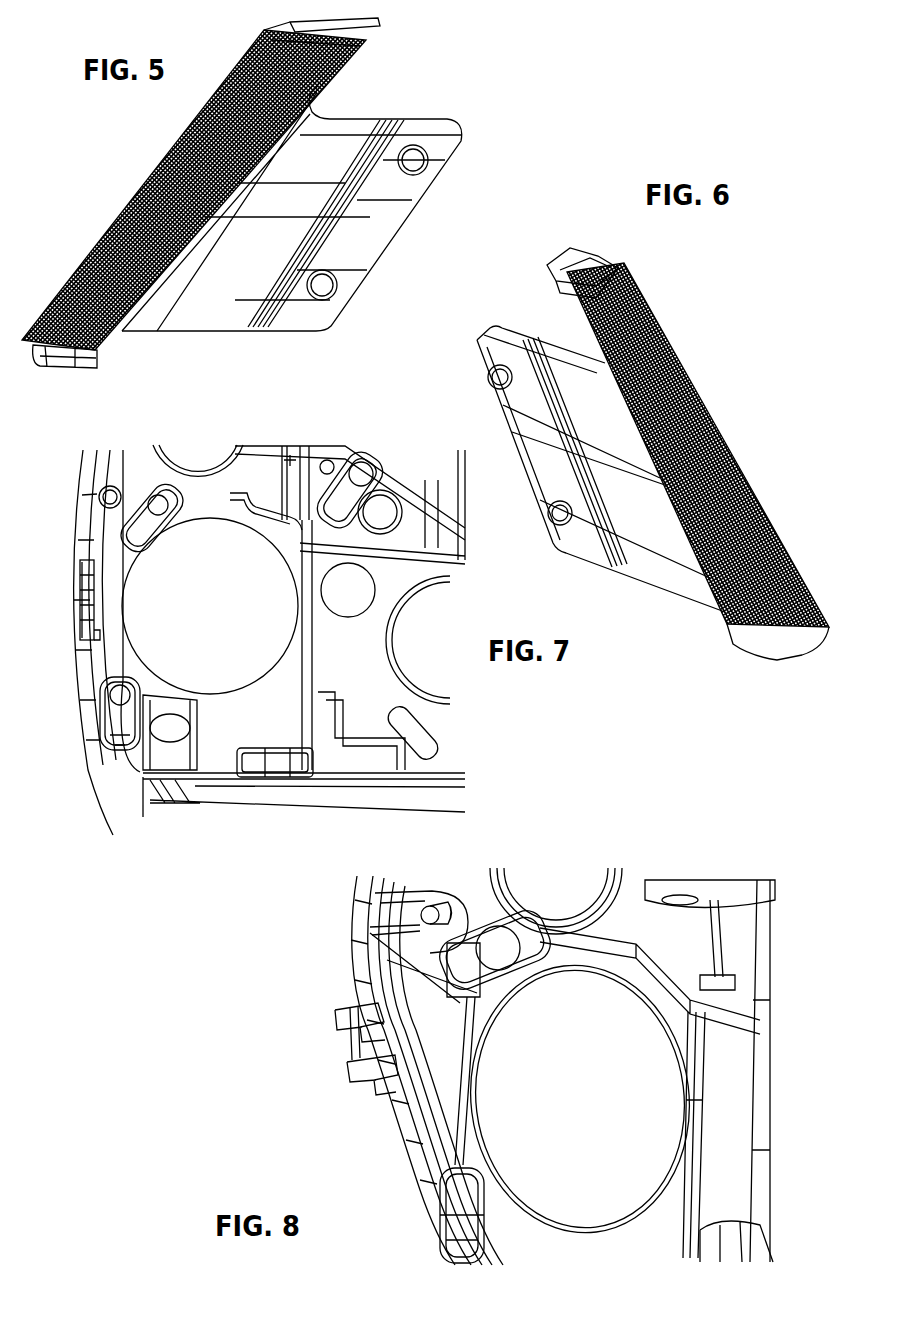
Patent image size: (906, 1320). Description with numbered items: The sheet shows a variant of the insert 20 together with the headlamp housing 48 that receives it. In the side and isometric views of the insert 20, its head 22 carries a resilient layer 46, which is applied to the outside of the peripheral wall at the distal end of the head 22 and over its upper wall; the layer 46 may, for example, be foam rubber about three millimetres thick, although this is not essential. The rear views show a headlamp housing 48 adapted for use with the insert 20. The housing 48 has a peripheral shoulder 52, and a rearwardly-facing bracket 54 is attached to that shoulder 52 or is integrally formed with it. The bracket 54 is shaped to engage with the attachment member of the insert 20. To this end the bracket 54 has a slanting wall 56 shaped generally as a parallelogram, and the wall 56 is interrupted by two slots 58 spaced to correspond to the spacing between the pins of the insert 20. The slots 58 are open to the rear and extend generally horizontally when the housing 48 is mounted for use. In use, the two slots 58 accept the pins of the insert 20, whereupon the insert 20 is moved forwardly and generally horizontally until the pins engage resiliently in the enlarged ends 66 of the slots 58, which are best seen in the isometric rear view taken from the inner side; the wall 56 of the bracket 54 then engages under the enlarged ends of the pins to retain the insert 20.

In FIG. 5, the insert 20 is at (280, 210).
In FIG. 6, the insert 20 is at (653, 415).
In FIG. 5, the head 22 is at (101, 357).
In FIG. 6, the head 22 is at (564, 246).
In FIG. 5, the resilient layer 46 is at (78, 266).
In FIG. 6, the resilient layer 46 is at (748, 468).
In FIG. 7, the headlamp housing 48 is at (130, 770).
In FIG. 8, the headlamp housing 48 is at (428, 897).
In FIG. 7, the peripheral shoulder 52 is at (80, 700).
In FIG. 8, the peripheral shoulder 52 is at (353, 948).
In FIG. 7, the bracket 54 is at (76, 610).
In FIG. 8, the bracket 54 is at (330, 1049).
In FIG. 8, the slanting wall 56 is at (376, 1080).
In FIG. 8, the slots 58 is at (345, 1035).
In FIG. 8, the enlarged ends 66 is at (350, 1012).